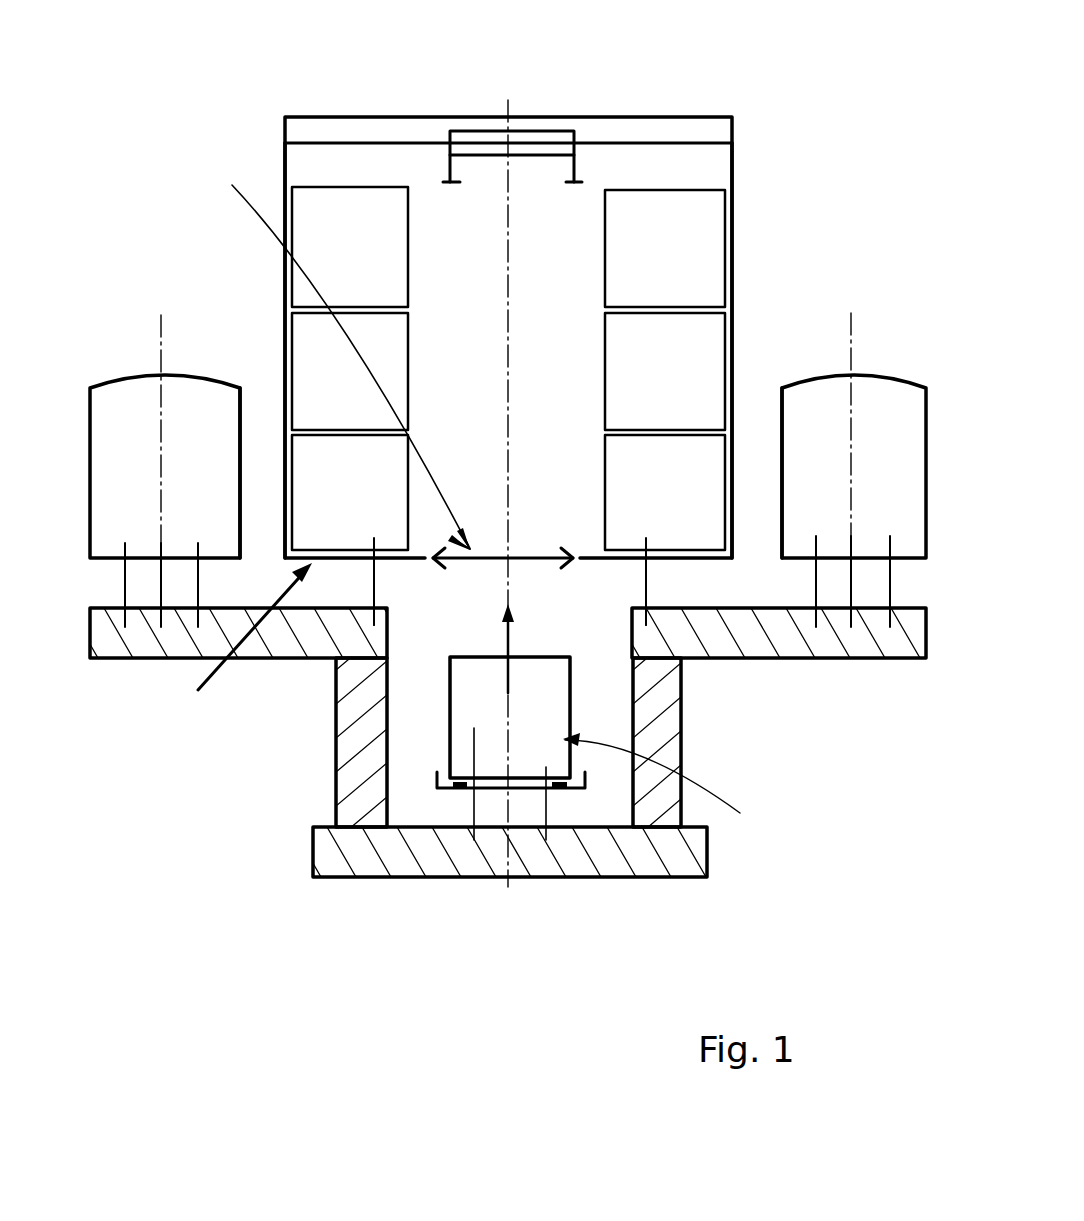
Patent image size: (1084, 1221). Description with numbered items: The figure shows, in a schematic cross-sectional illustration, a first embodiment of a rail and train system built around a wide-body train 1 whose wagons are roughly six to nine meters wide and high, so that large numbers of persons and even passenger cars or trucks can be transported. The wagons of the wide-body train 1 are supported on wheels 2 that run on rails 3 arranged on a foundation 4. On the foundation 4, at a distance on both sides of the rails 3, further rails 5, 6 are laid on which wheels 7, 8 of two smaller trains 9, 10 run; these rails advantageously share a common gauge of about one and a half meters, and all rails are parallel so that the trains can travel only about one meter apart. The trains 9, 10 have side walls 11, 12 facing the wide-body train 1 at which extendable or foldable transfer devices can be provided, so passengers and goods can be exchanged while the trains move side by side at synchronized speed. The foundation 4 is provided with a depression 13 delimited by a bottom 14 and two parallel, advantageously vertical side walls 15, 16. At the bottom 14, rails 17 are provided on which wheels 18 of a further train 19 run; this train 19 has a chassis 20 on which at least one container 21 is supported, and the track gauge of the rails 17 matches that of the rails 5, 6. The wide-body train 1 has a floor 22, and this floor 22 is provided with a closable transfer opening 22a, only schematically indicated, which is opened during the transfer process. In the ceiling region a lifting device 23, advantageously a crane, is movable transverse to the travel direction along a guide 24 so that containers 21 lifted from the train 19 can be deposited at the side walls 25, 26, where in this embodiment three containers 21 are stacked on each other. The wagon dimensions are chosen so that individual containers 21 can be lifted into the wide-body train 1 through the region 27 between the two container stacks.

The wide-body train 1 is at (740, 216).
The wheels 2 is at (374, 572).
The rails 3 is at (378, 598).
The foundation 4 is at (780, 630).
The further rails 5 is at (197, 587).
The further rails 6 is at (890, 590).
The wheels 7 is at (197, 567).
The wheels 8 is at (817, 567).
The train 9 is at (195, 370).
The train 10 is at (872, 366).
The side wall 11 is at (242, 423).
The side wall 12 is at (777, 417).
The depression 13 is at (497, 785).
The bottom 14 is at (420, 847).
The side wall 15 is at (348, 690).
The side wall 16 is at (667, 717).
The rails 17 is at (545, 813).
The wheels 18 is at (545, 765).
The train 19 is at (668, 786).
The chassis 20 is at (437, 791).
The container 21 is at (342, 232).
The floor 22 is at (245, 646).
The transfer opening 22a is at (320, 357).
The lifting device 23 is at (472, 133).
The guide 24 is at (642, 130).
The side wall 25 is at (285, 173).
The side wall 26 is at (733, 162).
The region 27 is at (440, 227).